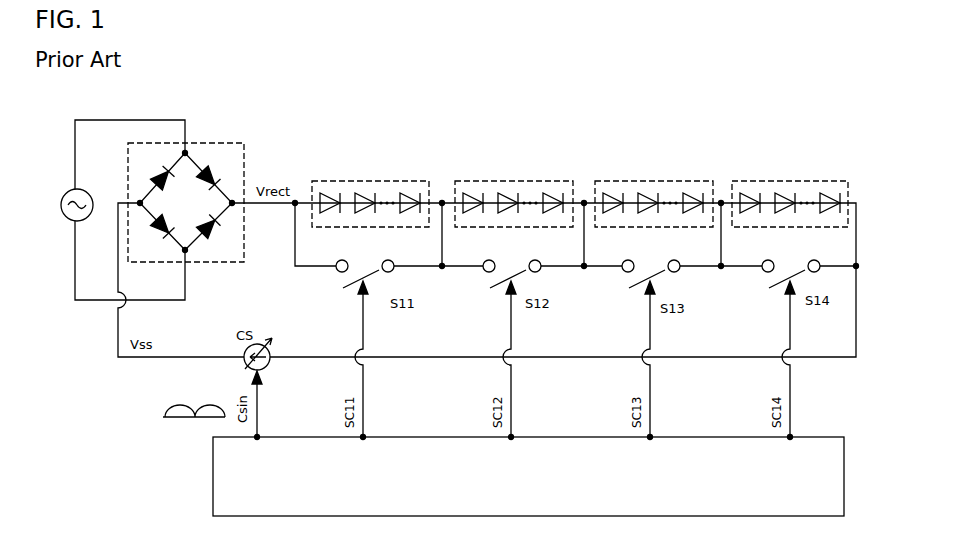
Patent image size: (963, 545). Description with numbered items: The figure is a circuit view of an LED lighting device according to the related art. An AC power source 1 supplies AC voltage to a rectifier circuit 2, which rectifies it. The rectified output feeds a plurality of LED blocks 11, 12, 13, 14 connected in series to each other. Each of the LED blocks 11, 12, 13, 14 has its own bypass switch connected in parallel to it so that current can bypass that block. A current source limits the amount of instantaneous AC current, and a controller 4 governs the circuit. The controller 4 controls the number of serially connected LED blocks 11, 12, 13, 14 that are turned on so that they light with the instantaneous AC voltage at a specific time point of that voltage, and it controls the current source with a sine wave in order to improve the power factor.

The AC power source 1 is at (88, 185).
The rectifier circuit 2 is at (260, 152).
The LED block 11 is at (365, 162).
The LED block 12 is at (492, 162).
The LED block 13 is at (638, 164).
The LED block 14 is at (770, 164).
The controller 4 is at (204, 469).